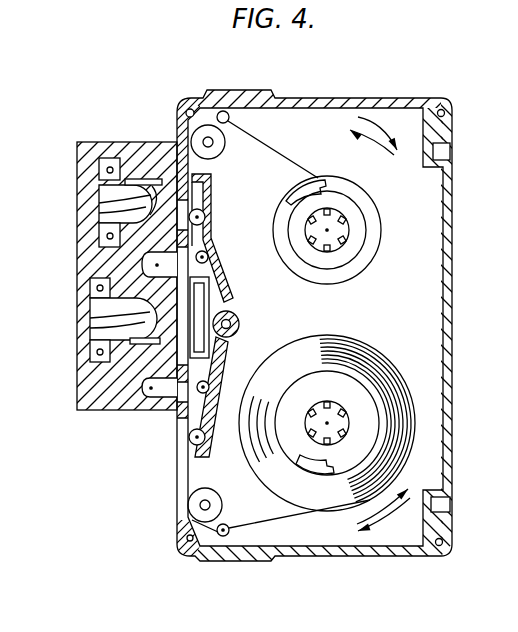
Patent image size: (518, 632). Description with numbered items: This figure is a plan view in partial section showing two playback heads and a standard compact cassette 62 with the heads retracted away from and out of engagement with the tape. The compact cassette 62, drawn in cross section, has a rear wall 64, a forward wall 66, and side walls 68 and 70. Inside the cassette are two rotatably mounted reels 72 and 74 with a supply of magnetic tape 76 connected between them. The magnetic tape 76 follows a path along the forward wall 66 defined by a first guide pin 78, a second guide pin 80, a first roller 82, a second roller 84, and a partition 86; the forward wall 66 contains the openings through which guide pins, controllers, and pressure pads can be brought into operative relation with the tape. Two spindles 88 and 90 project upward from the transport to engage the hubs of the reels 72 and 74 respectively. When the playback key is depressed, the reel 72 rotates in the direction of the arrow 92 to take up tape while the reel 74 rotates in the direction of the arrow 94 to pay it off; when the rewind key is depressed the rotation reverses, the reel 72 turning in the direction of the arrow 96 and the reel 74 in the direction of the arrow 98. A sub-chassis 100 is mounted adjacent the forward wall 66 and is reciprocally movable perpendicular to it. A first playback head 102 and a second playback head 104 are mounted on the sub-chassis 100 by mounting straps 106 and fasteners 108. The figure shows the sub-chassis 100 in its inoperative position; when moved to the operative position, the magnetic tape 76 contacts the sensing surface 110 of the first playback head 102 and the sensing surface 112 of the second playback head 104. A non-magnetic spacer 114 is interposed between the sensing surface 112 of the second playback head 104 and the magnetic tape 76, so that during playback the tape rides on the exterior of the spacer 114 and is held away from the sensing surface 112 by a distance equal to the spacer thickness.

The compact cassette 62 is at (460, 355).
The rear wall 64 is at (455, 188).
The forward wall 66 is at (178, 495).
The side wall 68 is at (249, 562).
The side wall 70 is at (255, 94).
The reel 72 is at (373, 241).
The reel 74 is at (346, 386).
The magnetic tape 76 is at (294, 521).
The first guide pin 78 is at (223, 110).
The second guide pin 80 is at (229, 527).
The first roller 82 is at (224, 150).
The second roller 84 is at (221, 508).
The partition 86 is at (225, 292).
The spindle 88 is at (333, 222).
The spindle 90 is at (322, 420).
The arrow 92 is at (373, 127).
The arrow 94 is at (390, 518).
The arrow 96 is at (360, 143).
The arrow 98 is at (399, 497).
The sub-chassis 100 is at (92, 402).
The first playback head 102 is at (118, 318).
The second playback head 104 is at (110, 194).
The mounting strap 106 is at (112, 158).
The fastener 108 is at (108, 237).
The sensing surface 110 is at (90, 341).
The sensing surface 112 is at (117, 205).
The non-magnetic spacer 114 is at (171, 187).